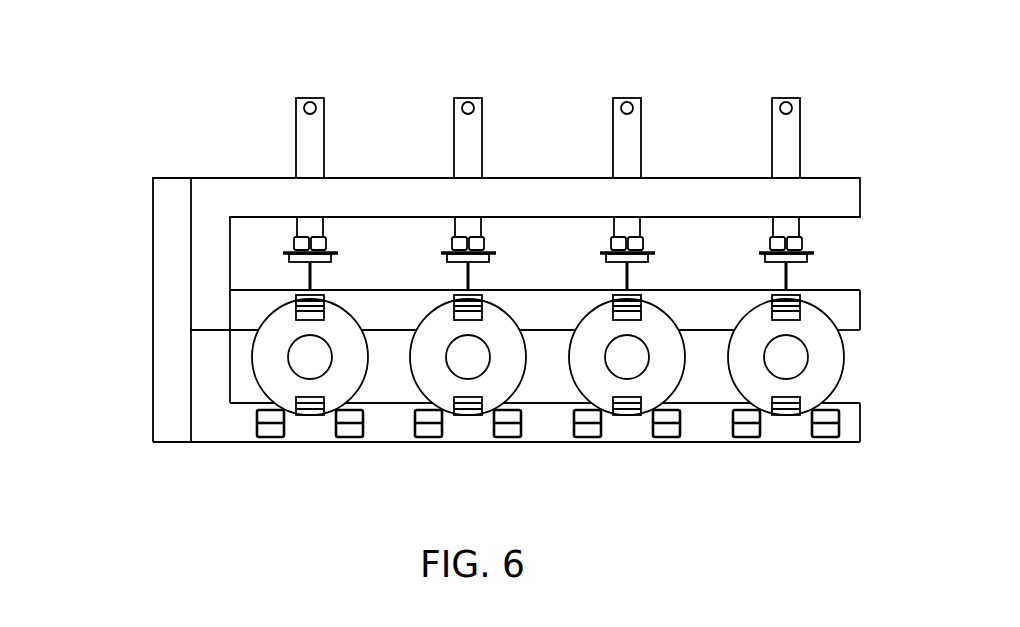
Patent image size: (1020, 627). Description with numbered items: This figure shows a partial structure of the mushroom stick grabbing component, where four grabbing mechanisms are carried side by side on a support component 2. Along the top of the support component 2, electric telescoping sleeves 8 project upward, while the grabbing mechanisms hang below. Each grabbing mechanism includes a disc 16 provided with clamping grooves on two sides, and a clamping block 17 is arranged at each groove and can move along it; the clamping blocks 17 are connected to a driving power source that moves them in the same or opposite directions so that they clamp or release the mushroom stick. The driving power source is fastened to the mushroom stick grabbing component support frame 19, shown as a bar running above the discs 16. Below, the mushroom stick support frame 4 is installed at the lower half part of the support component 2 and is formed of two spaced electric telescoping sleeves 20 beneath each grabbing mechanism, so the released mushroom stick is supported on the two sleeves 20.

The support component 2 is at (218, 203).
The electric telescoping sleeve 8 is at (310, 137).
The clamping block 17 is at (314, 292).
The mushroom stick grabbing component support frame 19 is at (245, 310).
The disc 16 is at (263, 353).
The sleeve 20 is at (353, 428).
The mushroom stick support frame 4 is at (557, 430).